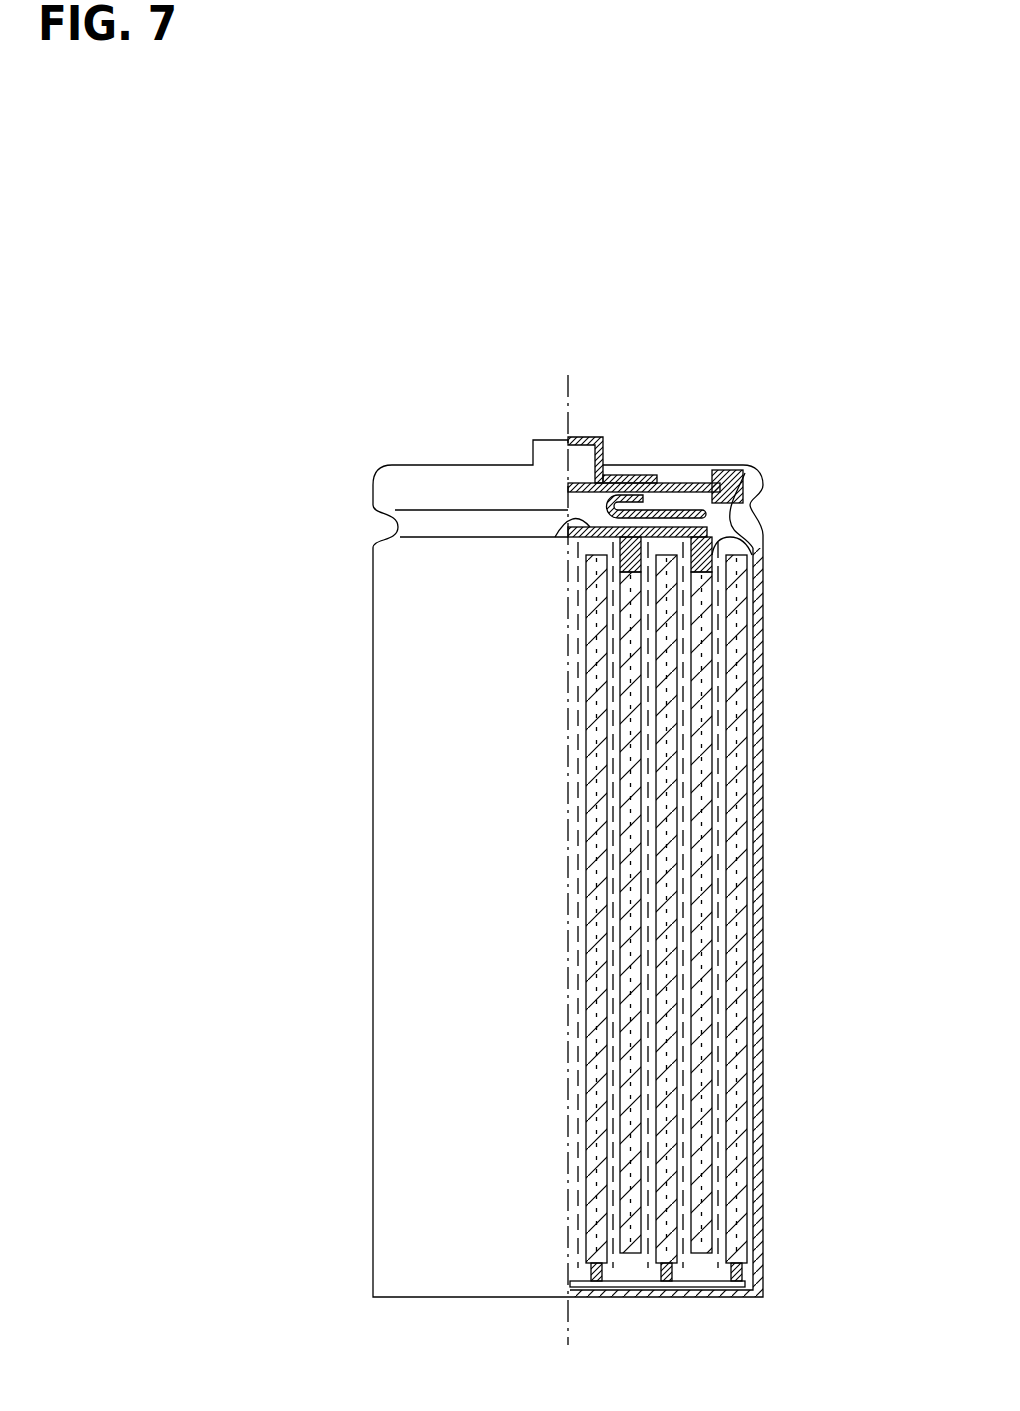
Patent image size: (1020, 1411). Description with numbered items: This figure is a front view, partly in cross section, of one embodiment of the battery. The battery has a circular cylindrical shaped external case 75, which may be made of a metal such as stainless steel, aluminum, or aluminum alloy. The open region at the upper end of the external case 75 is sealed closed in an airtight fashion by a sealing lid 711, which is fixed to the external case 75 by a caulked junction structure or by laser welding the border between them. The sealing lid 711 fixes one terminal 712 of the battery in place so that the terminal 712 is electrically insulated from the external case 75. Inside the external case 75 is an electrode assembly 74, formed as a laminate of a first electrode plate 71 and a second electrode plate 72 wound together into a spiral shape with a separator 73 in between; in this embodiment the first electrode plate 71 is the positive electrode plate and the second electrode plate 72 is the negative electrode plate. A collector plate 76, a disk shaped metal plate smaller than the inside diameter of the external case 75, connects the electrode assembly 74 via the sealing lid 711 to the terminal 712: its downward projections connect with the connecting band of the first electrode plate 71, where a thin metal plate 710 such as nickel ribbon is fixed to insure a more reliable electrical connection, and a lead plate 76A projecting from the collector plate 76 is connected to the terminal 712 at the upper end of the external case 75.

The terminal 712 is at (588, 437).
The lead plate 76A is at (657, 508).
The sealing lid 711 is at (713, 466).
The thin metal plate 710 is at (742, 530).
The collector plate 76 is at (558, 527).
The first electrode plate 71 is at (702, 648).
The second electrode plate 72 is at (735, 752).
The separator 73 is at (720, 698).
The electrode assembly 74 is at (748, 787).
The external case 75 is at (760, 928).